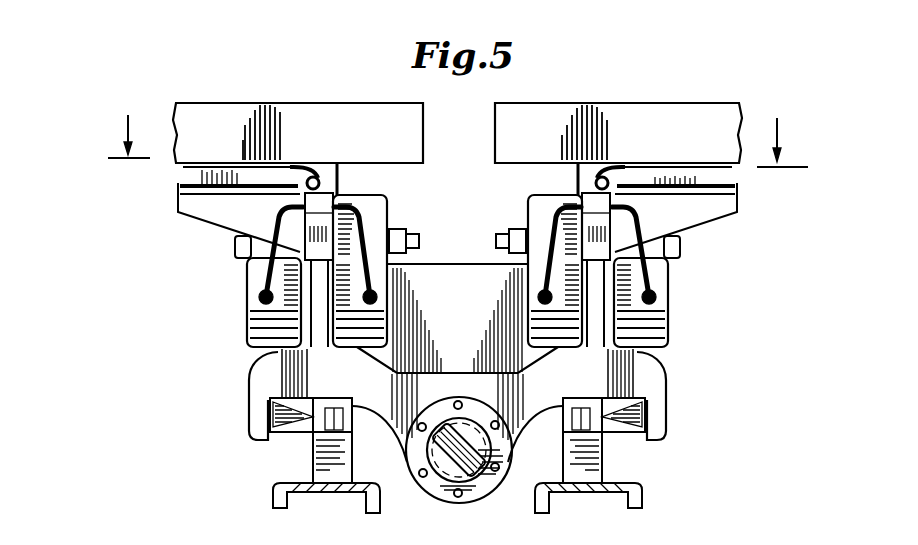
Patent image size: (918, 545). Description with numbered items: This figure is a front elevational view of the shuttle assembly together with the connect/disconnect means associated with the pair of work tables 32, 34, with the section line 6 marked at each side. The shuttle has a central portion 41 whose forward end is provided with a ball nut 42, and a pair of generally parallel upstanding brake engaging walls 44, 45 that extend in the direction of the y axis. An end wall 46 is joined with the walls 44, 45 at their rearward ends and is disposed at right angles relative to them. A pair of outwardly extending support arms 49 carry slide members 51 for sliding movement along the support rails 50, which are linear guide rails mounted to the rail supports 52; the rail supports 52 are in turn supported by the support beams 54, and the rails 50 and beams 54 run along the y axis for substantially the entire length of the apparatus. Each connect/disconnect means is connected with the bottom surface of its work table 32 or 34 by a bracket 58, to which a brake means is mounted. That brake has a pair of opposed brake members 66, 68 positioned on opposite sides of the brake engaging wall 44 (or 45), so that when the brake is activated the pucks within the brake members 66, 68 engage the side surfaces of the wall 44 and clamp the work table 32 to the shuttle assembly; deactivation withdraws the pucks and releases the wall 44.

The section line for FIG. 6 is at (458, 123).
The work table 32 is at (280, 127).
The work table 34 is at (620, 128).
The central portion 41 is at (518, 397).
The ball nut 42 is at (441, 487).
The brake engaging wall 44 is at (280, 313).
The brake engaging wall 45 is at (628, 318).
The end wall 46 is at (422, 270).
The support arm 49 is at (665, 415).
The support rail 50 is at (290, 412).
The slide member 51 is at (280, 398).
The rail support 52 is at (313, 448).
The support beam 54 is at (273, 487).
The bracket 58 is at (218, 218).
The brake member 66 is at (392, 326).
The brake member 68 is at (247, 276).